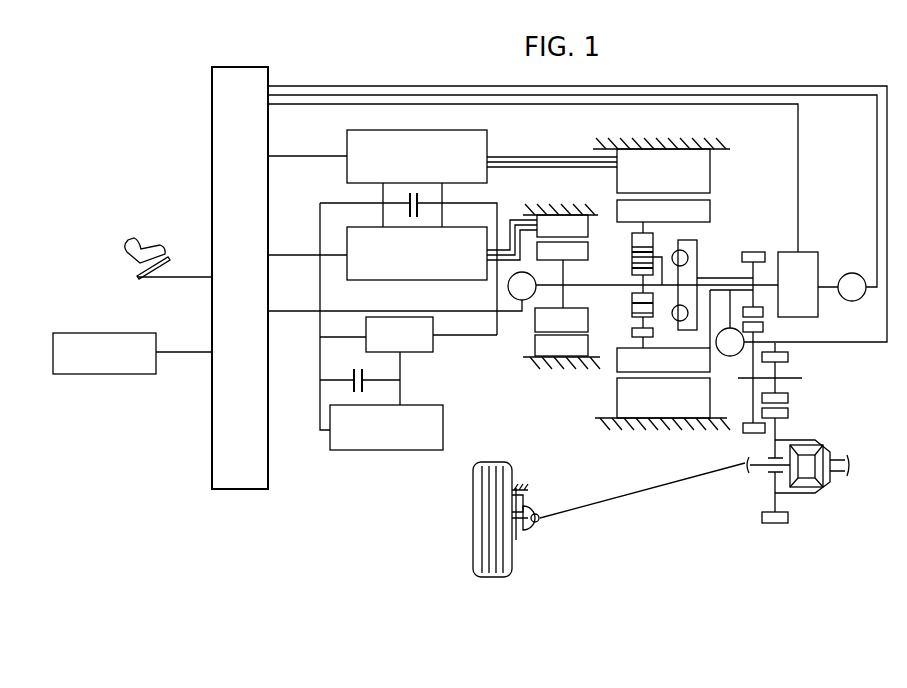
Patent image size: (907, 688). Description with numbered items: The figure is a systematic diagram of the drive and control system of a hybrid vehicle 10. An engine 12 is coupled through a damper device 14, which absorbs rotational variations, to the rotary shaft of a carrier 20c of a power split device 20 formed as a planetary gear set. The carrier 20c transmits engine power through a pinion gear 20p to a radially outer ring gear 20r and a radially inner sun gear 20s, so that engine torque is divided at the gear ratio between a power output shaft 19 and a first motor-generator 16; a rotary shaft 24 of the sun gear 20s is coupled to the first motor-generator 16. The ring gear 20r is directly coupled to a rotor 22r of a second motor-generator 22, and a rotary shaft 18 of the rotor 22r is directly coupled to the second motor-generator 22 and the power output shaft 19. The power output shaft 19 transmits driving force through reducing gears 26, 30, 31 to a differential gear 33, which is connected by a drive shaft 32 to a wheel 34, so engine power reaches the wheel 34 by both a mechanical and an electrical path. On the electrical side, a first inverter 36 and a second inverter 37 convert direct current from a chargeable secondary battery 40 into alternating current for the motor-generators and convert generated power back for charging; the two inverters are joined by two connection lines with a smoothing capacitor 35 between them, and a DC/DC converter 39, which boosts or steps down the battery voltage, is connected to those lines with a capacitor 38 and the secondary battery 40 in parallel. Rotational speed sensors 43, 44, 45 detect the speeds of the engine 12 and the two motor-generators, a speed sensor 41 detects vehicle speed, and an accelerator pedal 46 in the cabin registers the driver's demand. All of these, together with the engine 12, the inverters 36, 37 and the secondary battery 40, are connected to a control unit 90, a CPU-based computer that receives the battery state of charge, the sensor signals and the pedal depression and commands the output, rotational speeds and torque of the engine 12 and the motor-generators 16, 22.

The hybrid vehicle 10 is at (809, 562).
The engine 12 is at (823, 260).
The damper device 14 is at (694, 250).
The first motor-generator 16 is at (524, 344).
The rotary shaft 18 is at (710, 330).
The power output shaft 19 is at (737, 278).
The power split device 20 is at (612, 330).
The carrier 20c is at (662, 257).
The pinion gear 20p is at (632, 250).
The ring gear 20r is at (637, 335).
The sun gear 20s is at (632, 296).
The second motor-generator 22 is at (633, 410).
The rotor 22r is at (665, 362).
The rotary shaft 24 is at (609, 284).
The reducing gear 26 is at (765, 251).
The reducing gear 30 is at (753, 434).
The reducing gear 31 is at (788, 398).
The drive shaft 32 is at (652, 494).
The differential gear 33 is at (815, 493).
The wheel 34 is at (477, 546).
The capacitor 35 is at (408, 197).
The first inverter 36 is at (385, 280).
The second inverter 37 is at (347, 140).
The capacitor 38 is at (350, 390).
The DC/DC converter 39 is at (437, 348).
The secondary battery 40 is at (443, 428).
The speed sensor 41 is at (97, 375).
The rotational speed sensor 43 is at (852, 301).
The rotational speed sensor 44 is at (730, 356).
The rotational speed sensor 45 is at (508, 290).
The accelerator pedal 46 is at (125, 262).
The control unit 90 is at (232, 490).